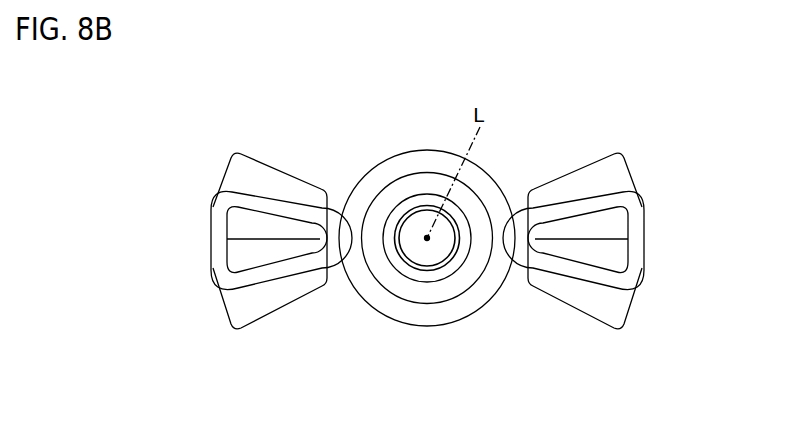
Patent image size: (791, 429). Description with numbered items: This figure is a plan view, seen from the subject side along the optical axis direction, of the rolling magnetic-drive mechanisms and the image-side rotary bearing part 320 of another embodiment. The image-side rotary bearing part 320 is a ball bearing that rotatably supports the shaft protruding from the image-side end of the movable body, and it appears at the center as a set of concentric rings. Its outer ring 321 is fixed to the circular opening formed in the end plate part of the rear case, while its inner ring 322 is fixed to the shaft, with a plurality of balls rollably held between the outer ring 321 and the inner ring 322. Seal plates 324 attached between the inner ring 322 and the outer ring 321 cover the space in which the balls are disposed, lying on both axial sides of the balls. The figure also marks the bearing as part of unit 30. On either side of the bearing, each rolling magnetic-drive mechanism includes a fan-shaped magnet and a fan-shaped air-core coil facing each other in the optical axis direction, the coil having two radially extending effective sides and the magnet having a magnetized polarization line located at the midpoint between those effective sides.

The image-side rotary bearing part 320 is at (427, 230).
The lens unit 30 is at (427, 230).
The outer ring 321 is at (465, 320).
The seal plates 324 is at (432, 292).
The inner ring 322 is at (407, 272).